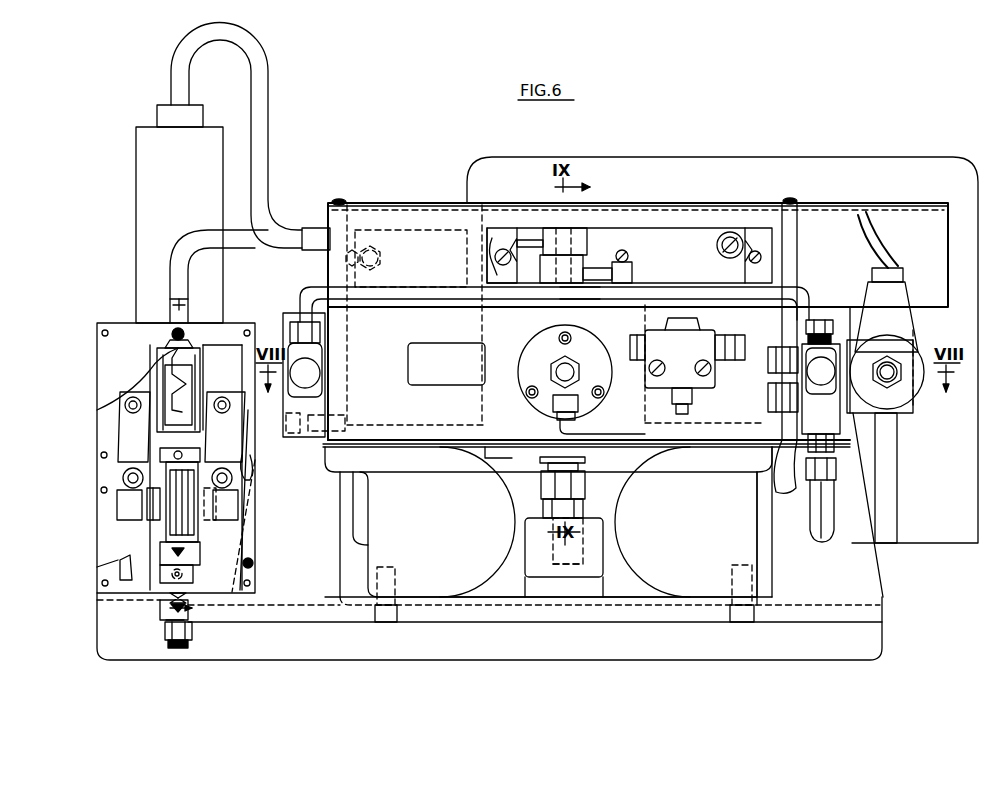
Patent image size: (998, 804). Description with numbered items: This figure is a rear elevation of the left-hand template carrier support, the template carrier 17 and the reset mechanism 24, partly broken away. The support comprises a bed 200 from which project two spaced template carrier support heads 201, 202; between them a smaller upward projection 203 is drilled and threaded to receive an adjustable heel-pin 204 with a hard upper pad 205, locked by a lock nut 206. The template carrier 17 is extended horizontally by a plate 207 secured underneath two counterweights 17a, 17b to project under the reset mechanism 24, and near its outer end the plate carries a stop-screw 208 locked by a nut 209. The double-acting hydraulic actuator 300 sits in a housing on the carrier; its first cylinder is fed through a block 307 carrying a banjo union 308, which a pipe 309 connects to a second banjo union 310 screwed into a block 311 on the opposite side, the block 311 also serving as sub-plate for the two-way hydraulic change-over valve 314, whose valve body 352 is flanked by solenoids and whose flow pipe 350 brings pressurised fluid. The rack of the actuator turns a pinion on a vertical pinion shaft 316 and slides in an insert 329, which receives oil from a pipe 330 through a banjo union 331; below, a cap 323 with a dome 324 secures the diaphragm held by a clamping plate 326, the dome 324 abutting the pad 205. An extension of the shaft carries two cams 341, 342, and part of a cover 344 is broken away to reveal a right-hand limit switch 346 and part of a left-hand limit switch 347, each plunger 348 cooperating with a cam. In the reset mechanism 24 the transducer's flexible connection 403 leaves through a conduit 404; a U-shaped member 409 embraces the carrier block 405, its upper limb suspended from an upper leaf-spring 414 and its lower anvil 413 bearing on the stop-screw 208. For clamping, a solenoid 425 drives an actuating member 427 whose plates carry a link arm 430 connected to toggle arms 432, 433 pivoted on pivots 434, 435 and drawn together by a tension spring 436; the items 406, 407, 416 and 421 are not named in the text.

The template carrier 17 is at (333, 203).
The counterweight 17a is at (464, 522).
The counterweight 17b is at (664, 522).
The reset mechanism 24 is at (97, 355).
The bed 200 is at (308, 661).
The template carrier support head 201 is at (205, 468).
The template carrier support head 202 is at (897, 491).
The upward projection 203 is at (603, 548).
The heel-pin 204 is at (586, 486).
The hard upper pad 205 is at (580, 466).
The lock nut 206 is at (584, 512).
The plate 207 is at (299, 614).
The stop-screw 208 is at (188, 644).
The nut 209 is at (168, 627).
The double-acting hydraulic actuator 300 is at (510, 366).
The block 307 is at (284, 318).
The banjo union 308 is at (322, 370).
The pipe 309 is at (309, 299).
The banjo union 310 is at (821, 412).
The block 311 is at (827, 320).
The two-way hydraulic change-over valve 314 is at (922, 396).
The pinion shaft 316 is at (578, 292).
The cap 323 is at (506, 462).
The dome 324 is at (548, 462).
The clamping plate 326 is at (480, 452).
The insert 329 is at (531, 352).
The pipe 330 is at (616, 435).
The banjo union 331 is at (576, 352).
The cam 341 is at (586, 262).
The cam 342 is at (552, 242).
The cover 344 is at (718, 205).
The right-hand limit switch 346 is at (629, 255).
The left-hand limit switch 347 is at (418, 229).
The plunger 348 is at (505, 240).
The flow pipe 350 is at (833, 540).
The valve body 352 is at (903, 418).
The flexible connection 403 is at (166, 353).
The conduit 404 is at (181, 262).
The carrier block 405 is at (166, 522).
The pivot 406 is at (122, 476).
The pad 407 is at (170, 535).
The U-shaped member 409 is at (205, 542).
The lower anvil 413 is at (170, 600).
The upper leaf-spring 414 is at (160, 452).
The fitting 416 is at (160, 568).
The slide 421 is at (192, 386).
The solenoid 425 is at (136, 183).
The actuating member 427 is at (190, 364).
The link arm 430 is at (148, 372).
The toggle arm 432 is at (150, 492).
The toggle arm 433 is at (233, 454).
The pivot 434 is at (117, 492).
The pivot 435 is at (246, 476).
The tension spring 436 is at (145, 440).